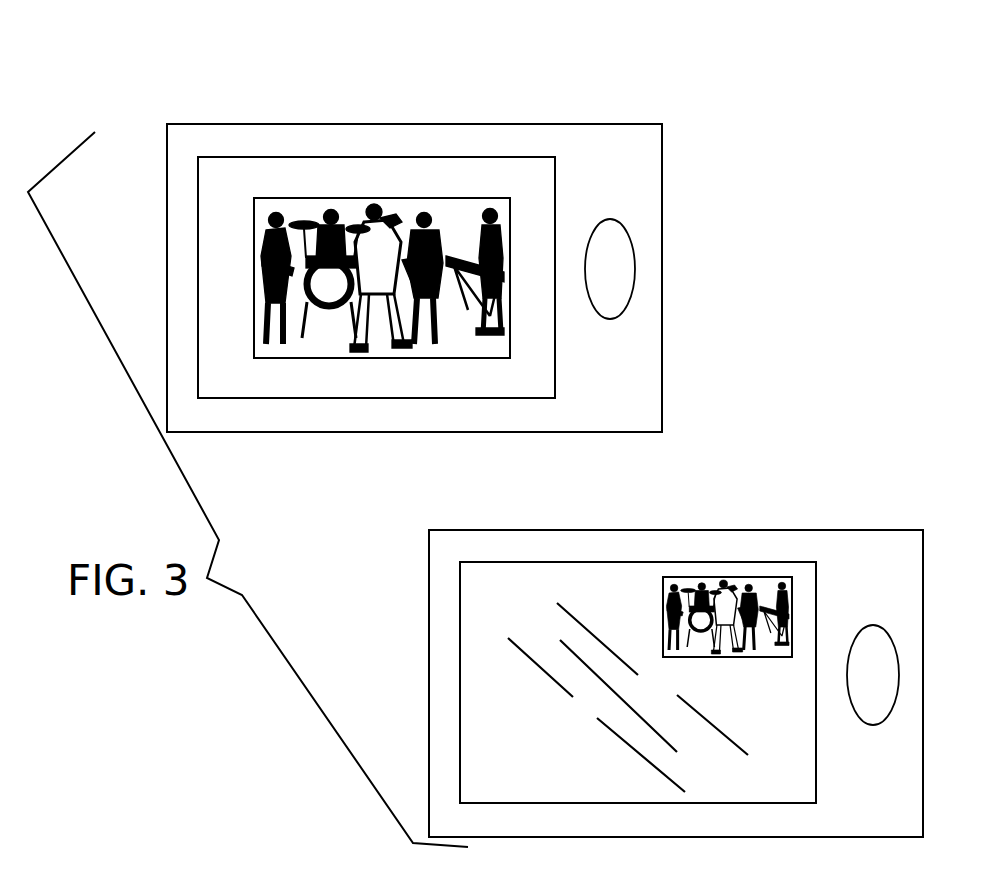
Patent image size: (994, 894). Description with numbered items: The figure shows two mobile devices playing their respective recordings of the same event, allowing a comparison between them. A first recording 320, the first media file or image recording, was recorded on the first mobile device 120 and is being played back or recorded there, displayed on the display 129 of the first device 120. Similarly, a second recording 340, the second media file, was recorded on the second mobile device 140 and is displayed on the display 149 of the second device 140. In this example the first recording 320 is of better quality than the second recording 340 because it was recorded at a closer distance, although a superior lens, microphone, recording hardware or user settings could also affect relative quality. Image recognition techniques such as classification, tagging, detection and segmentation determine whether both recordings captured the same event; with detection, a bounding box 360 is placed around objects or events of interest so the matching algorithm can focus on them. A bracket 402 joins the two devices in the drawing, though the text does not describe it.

The first mobile device 120 is at (662, 167).
The display 129 is at (434, 157).
The first recording 320 is at (385, 172).
The bounding box 360 is at (392, 357).
The second mobile device 140 is at (438, 777).
The display 149 is at (582, 562).
The second recording 340 is at (611, 593).
The transfer indication bracket 402 is at (248, 513).